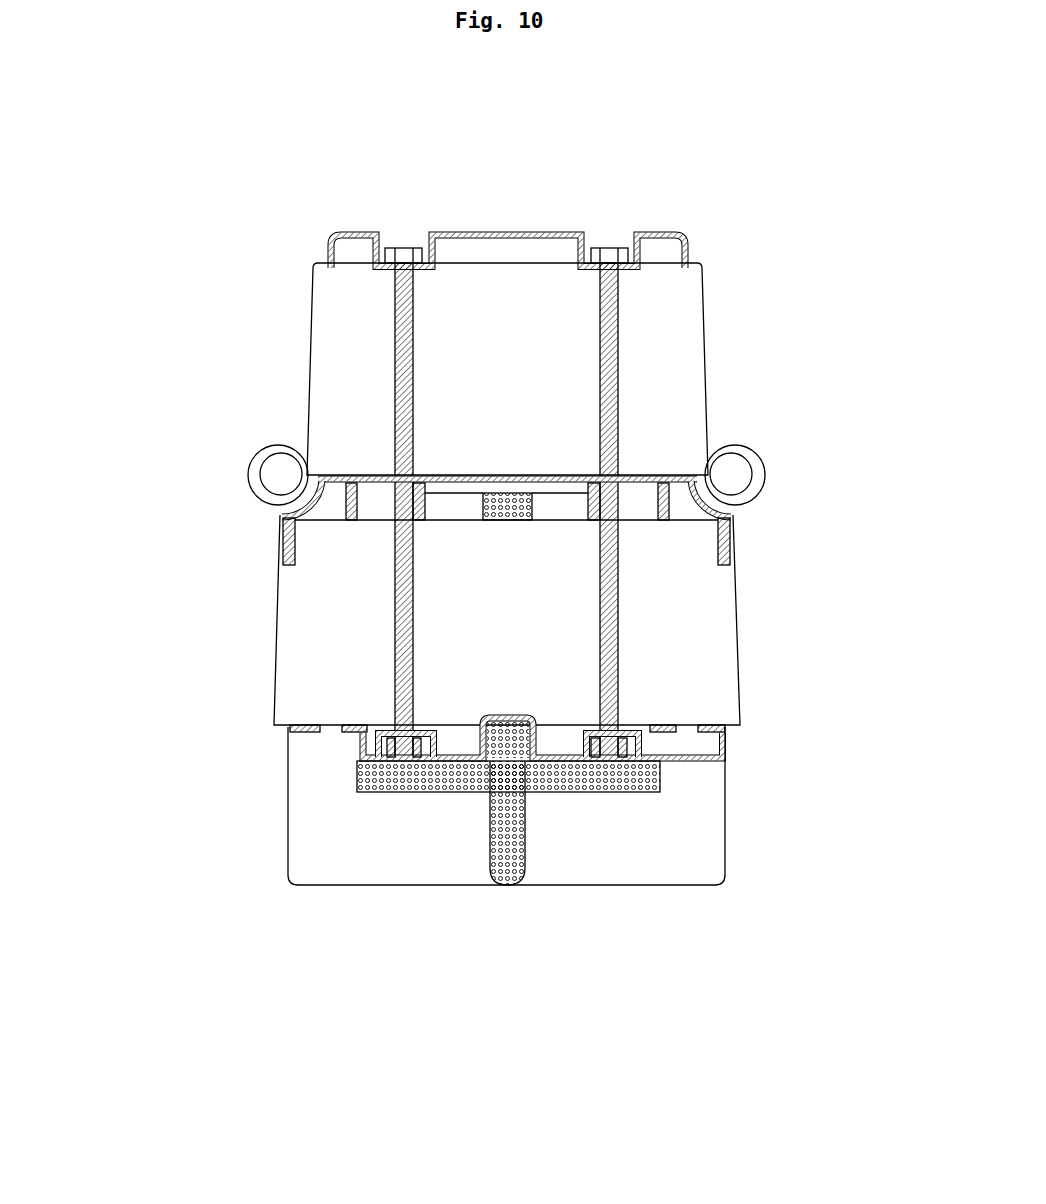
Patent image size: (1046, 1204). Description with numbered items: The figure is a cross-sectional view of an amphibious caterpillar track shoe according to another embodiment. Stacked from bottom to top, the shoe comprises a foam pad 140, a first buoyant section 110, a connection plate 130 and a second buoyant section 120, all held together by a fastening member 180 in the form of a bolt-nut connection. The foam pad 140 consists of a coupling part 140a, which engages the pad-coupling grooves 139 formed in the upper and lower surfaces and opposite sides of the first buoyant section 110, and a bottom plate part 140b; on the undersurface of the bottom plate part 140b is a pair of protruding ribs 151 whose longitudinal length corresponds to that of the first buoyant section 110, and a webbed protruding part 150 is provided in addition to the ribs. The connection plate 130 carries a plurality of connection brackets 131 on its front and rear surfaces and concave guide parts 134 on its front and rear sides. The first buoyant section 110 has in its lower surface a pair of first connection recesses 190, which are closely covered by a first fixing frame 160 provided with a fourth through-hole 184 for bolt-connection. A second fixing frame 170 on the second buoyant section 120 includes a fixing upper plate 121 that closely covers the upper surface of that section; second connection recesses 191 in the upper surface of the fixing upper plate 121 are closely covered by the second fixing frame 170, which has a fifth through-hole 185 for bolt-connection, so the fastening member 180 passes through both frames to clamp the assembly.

The first buoyant section 110 is at (323, 617).
The second buoyant section 120 is at (353, 340).
The fixing upper plate 121 is at (507, 234).
The connection plate 130 is at (710, 447).
The connection bracket 131 is at (262, 453).
The concave guide part 134 is at (285, 493).
The pad-coupling groove 139 is at (513, 520).
The foam pad 140 is at (444, 787).
The coupling part 140a is at (483, 520).
The bottom plate part 140b is at (410, 792).
The webbed protruding part 150 is at (503, 850).
The protruding rib 151 is at (695, 835).
The first fixing frame 160 is at (735, 542).
The second fixing frame 170 is at (675, 240).
The fastening member 180 is at (404, 255).
The fourth through-hole 184 is at (623, 725).
The fifth through-hole 185 is at (702, 280).
The first connection recess 190 is at (657, 752).
The second connection recess 191 is at (614, 240).